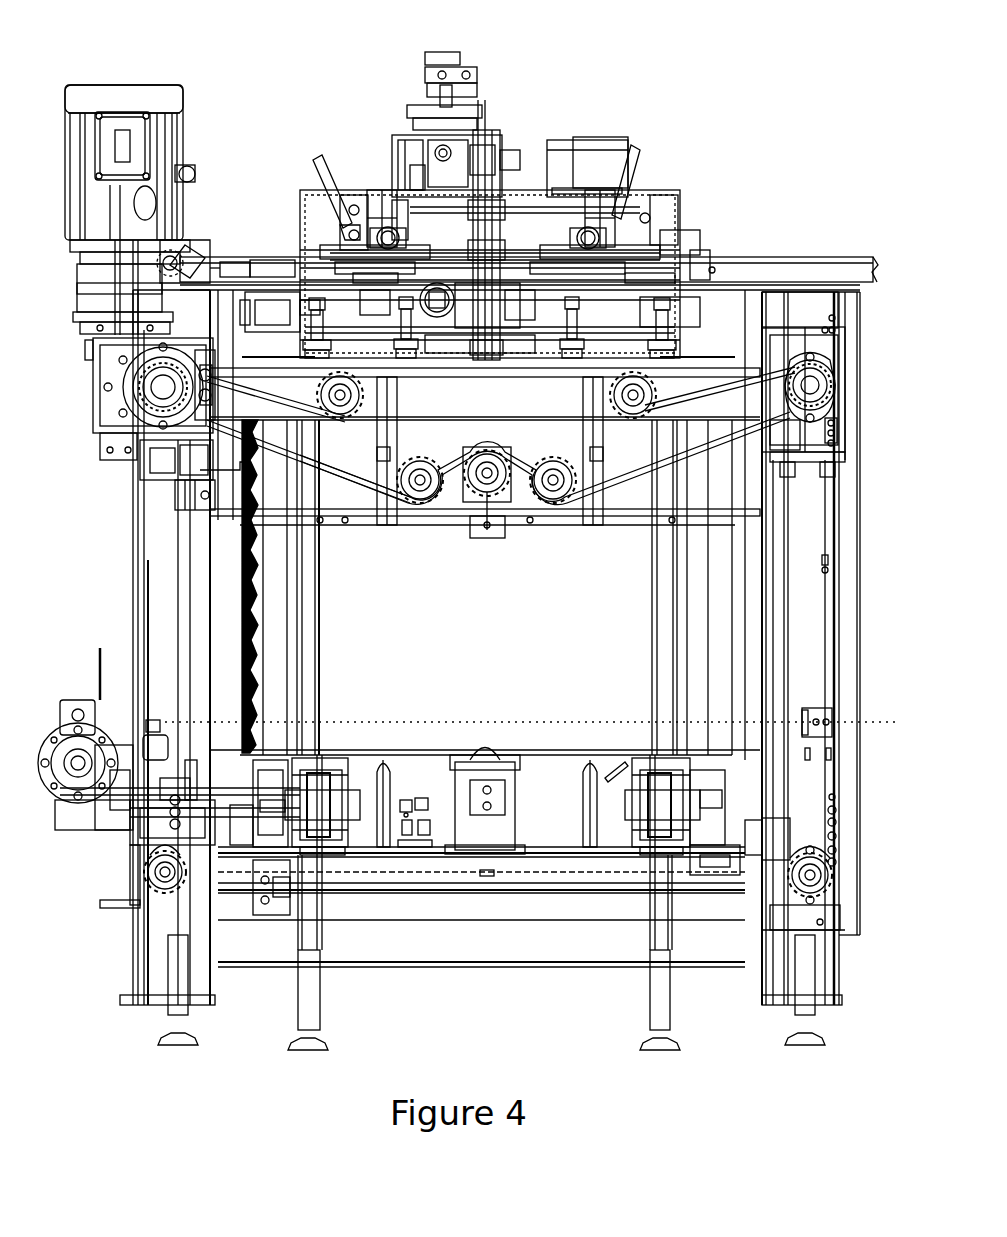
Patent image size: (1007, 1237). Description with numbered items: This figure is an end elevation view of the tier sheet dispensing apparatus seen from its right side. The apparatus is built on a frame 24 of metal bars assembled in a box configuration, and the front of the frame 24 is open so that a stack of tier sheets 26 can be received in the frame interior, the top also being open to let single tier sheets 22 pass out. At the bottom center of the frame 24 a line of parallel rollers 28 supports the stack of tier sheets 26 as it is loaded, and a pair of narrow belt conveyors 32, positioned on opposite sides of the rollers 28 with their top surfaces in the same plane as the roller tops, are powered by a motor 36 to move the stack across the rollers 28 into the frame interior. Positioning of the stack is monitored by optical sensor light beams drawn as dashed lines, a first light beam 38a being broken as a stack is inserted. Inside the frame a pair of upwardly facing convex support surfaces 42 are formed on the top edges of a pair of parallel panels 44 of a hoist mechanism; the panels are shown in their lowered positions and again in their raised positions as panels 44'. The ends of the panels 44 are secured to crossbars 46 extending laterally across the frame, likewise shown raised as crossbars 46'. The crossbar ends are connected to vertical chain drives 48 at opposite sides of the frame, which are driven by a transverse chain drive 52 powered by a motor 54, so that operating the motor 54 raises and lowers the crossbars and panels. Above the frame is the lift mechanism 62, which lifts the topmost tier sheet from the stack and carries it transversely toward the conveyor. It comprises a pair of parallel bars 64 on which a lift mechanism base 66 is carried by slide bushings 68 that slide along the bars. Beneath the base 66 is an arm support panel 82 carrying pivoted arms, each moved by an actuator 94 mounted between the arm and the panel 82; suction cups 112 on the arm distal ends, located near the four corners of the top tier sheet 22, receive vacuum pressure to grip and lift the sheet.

The tier sheet 22 is at (732, 355).
The frame 24 is at (827, 258).
The stack of tier sheets 26 is at (240, 591).
The rollers 28 is at (490, 812).
The belt conveyors 32 is at (335, 757).
The motor 36 is at (45, 768).
The first light beam 38a is at (745, 722).
The support surfaces 42 is at (386, 828).
The panels 44 is at (485, 917).
The panels in upper positions 44' is at (481, 483).
The crossbars 46 is at (476, 948).
The crossbars in upper positions 46' is at (162, 492).
The vertical chain drives 48 is at (150, 892).
The transverse chain drive 52 is at (222, 335).
The motor 54 is at (152, 132).
The lift mechanism 62 is at (565, 81).
The parallel bars 64 is at (383, 240).
The lift mechanism base 66 is at (370, 240).
The slide bushings 68 is at (360, 226).
The arm support panel 82 is at (560, 328).
The actuator 94 is at (313, 320).
The suction cups 112 is at (302, 357).